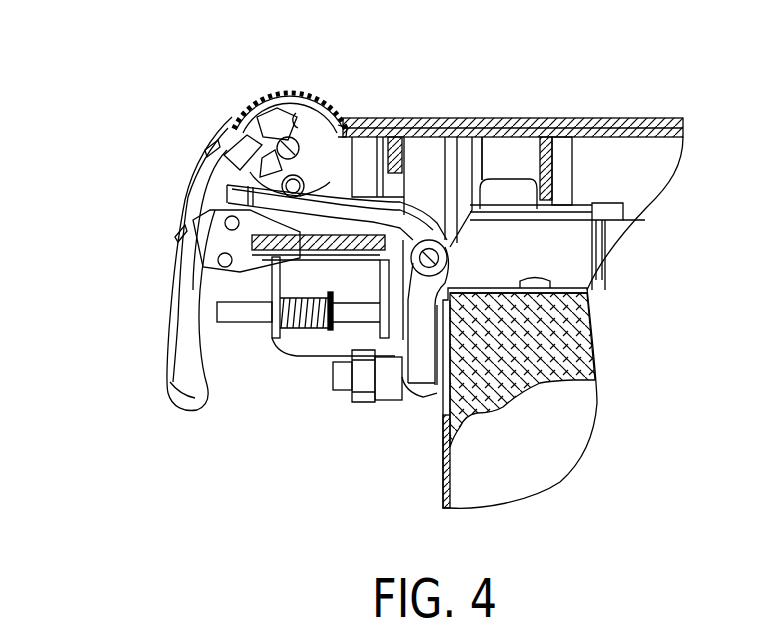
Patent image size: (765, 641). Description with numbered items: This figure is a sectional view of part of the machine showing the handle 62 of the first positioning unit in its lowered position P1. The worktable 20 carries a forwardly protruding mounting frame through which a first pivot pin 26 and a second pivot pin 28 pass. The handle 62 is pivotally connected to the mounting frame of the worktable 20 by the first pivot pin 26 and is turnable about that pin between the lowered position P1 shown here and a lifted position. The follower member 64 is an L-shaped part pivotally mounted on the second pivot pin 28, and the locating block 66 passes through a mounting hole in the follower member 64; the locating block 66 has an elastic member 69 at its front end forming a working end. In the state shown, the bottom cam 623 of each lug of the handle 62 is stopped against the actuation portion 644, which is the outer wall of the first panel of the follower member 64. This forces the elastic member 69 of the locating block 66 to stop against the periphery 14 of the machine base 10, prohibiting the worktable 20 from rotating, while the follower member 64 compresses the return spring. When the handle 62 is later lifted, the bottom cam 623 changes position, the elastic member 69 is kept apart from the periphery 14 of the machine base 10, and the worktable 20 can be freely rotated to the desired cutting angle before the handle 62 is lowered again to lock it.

The machine base 10 is at (443, 472).
The periphery 14 is at (440, 442).
The worktable 20 is at (622, 120).
The first pivot pin 26 is at (284, 143).
The second pivot pin 28 is at (433, 245).
The handle 62 is at (183, 312).
The follower member 64 is at (352, 197).
The locating block 66 is at (337, 388).
The elastic member 69 is at (433, 407).
The bottom cam 623 is at (262, 172).
The actuation portion 644 is at (278, 157).
The lowered position P1 is at (132, 242).